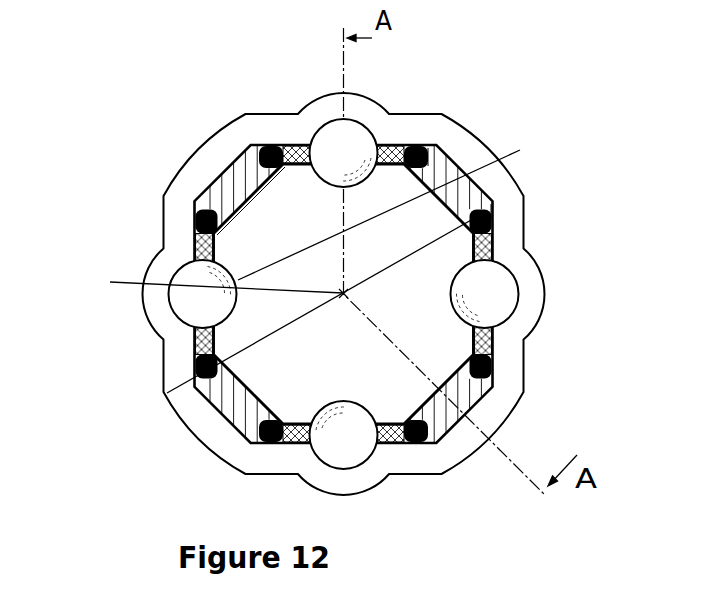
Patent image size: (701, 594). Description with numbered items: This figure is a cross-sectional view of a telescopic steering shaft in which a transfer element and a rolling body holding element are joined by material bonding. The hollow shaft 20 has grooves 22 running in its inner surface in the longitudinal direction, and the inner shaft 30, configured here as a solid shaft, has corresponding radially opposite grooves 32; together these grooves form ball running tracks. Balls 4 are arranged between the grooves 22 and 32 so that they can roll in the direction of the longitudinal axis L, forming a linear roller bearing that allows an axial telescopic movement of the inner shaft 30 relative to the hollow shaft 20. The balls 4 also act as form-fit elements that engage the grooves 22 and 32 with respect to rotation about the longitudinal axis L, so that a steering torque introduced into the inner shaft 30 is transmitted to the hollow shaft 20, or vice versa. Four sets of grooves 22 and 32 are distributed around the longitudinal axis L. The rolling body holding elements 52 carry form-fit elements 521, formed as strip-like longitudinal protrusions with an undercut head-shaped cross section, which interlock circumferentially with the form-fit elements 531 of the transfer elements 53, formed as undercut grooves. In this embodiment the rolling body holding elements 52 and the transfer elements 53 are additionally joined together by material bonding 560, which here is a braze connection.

The ball 4 is at (333, 138).
The hollow shaft 20 is at (223, 152).
The groove 22 is at (325, 140).
The inner shaft 30 is at (312, 265).
The groove 32 is at (320, 188).
The rolling body holding element 52 is at (388, 147).
The transfer element 53 is at (452, 190).
The form-fit element 521 is at (432, 150).
The form-fit element 531 is at (450, 150).
The material bonding 560 is at (265, 148).
The longitudinal axis L is at (218, 287).